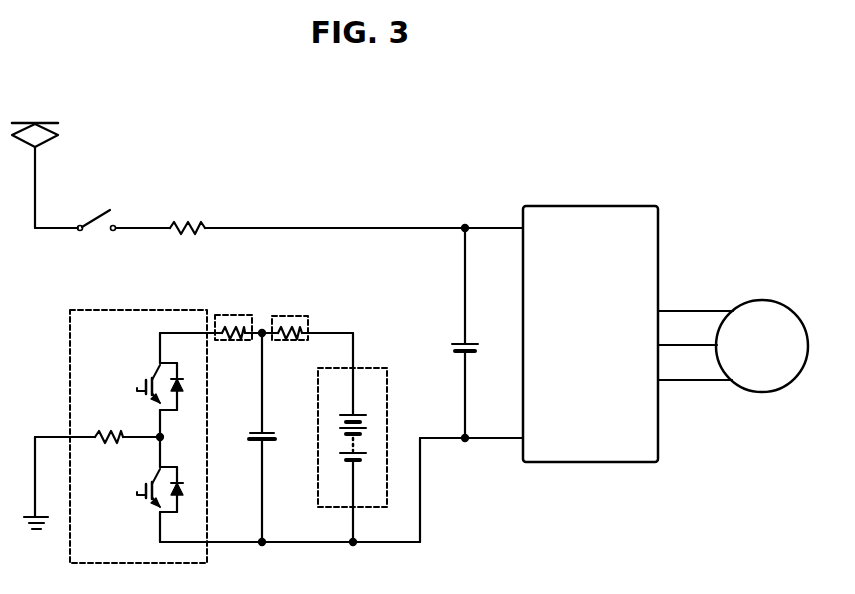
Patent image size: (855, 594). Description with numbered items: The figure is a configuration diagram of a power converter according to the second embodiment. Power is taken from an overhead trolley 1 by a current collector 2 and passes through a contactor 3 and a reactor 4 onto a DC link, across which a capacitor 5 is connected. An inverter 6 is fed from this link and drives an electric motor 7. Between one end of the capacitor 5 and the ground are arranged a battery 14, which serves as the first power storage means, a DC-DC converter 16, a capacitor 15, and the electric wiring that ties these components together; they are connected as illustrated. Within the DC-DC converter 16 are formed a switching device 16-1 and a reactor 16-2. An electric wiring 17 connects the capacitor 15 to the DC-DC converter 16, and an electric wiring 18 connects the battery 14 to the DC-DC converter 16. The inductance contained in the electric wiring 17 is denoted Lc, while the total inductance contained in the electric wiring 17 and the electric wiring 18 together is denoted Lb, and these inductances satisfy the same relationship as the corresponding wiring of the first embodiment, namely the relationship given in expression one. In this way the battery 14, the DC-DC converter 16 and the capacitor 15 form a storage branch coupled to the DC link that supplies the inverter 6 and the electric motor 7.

The overhead trolley 1 is at (28, 122).
The current collector 2 is at (60, 135).
The contactor 3 is at (100, 217).
The reactor 4 is at (182, 220).
The capacitor 5 is at (470, 338).
The inverter 6 is at (658, 245).
The electric motor 7 is at (772, 299).
The battery 14 is at (372, 367).
The capacitor 15 is at (265, 444).
The DC-DC converter 16 is at (115, 306).
The switching device 16-1 is at (157, 378).
The reactor 16-2 is at (113, 432).
The electric wiring 17 is at (228, 318).
The electric wiring 18 is at (285, 316).